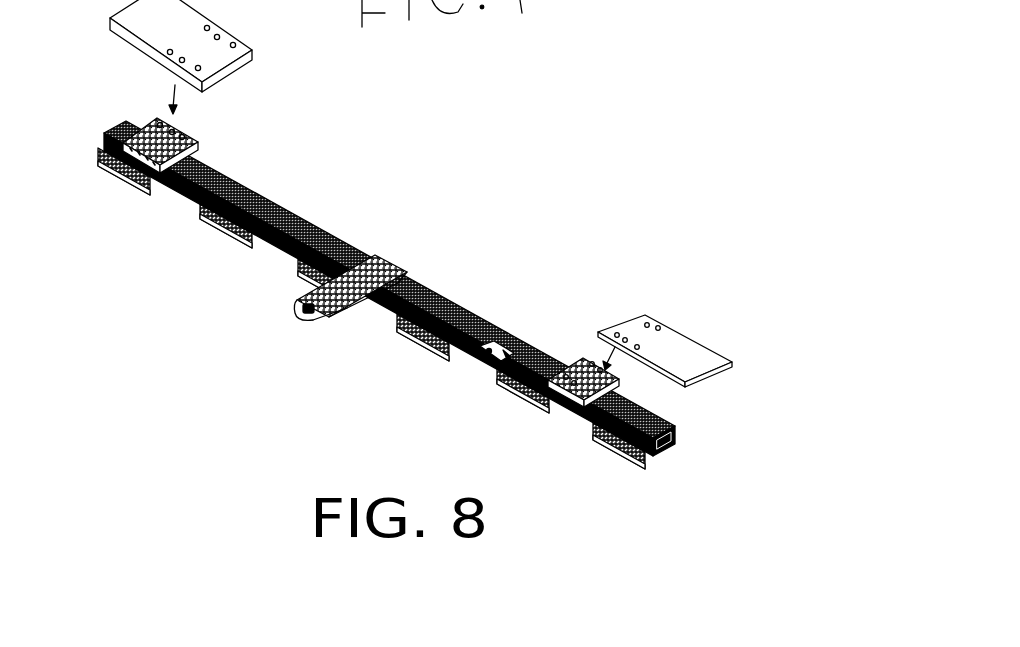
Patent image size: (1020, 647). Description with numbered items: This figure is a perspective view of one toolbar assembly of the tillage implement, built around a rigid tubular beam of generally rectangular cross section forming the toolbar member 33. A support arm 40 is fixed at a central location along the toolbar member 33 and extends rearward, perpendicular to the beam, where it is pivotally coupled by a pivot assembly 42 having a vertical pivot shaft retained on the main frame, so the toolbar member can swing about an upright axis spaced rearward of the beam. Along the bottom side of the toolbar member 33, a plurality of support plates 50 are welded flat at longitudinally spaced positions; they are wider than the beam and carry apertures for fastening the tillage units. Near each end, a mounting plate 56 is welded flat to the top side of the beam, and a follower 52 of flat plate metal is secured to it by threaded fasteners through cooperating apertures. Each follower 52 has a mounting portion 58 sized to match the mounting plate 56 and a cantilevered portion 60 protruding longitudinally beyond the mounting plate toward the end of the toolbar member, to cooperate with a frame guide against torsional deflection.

The toolbar member 33 is at (290, 212).
The support arm 40 is at (352, 308).
The pivot assembly 42 is at (297, 317).
The support plates 50 is at (230, 235).
The follower 52 is at (419, 193).
The mounting plate 56 is at (177, 130).
The mounting portion 58 is at (212, 53).
The cantilevered portion 60 is at (143, 22).